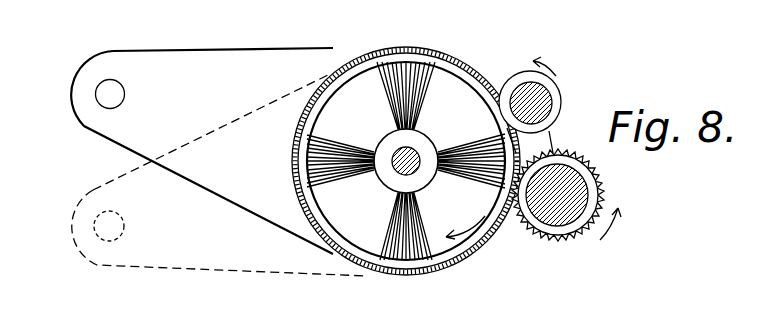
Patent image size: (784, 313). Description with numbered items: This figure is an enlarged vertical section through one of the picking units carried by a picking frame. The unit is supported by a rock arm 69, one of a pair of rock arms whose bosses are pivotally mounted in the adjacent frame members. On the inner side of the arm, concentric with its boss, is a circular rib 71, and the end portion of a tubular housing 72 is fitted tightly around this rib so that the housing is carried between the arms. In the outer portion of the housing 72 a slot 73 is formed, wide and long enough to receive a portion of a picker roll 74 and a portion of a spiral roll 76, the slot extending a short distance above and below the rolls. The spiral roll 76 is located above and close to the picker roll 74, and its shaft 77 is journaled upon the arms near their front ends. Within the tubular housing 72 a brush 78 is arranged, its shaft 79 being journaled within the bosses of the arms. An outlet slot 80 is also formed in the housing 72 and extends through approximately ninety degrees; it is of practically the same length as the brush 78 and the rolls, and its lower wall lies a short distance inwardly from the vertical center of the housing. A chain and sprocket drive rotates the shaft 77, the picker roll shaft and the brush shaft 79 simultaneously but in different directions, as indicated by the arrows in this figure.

The rock arm 69 is at (220, 58).
The circular rib 71 is at (360, 29).
The tubular housing 72 is at (420, 47).
The slot 73 is at (487, 71).
The picker roll 74 is at (596, 190).
The spiral roll 76 is at (548, 99).
The shaft 77 is at (538, 112).
The brush 78 is at (423, 106).
The shaft 79 is at (417, 170).
The outlet slot 80 is at (325, 243).